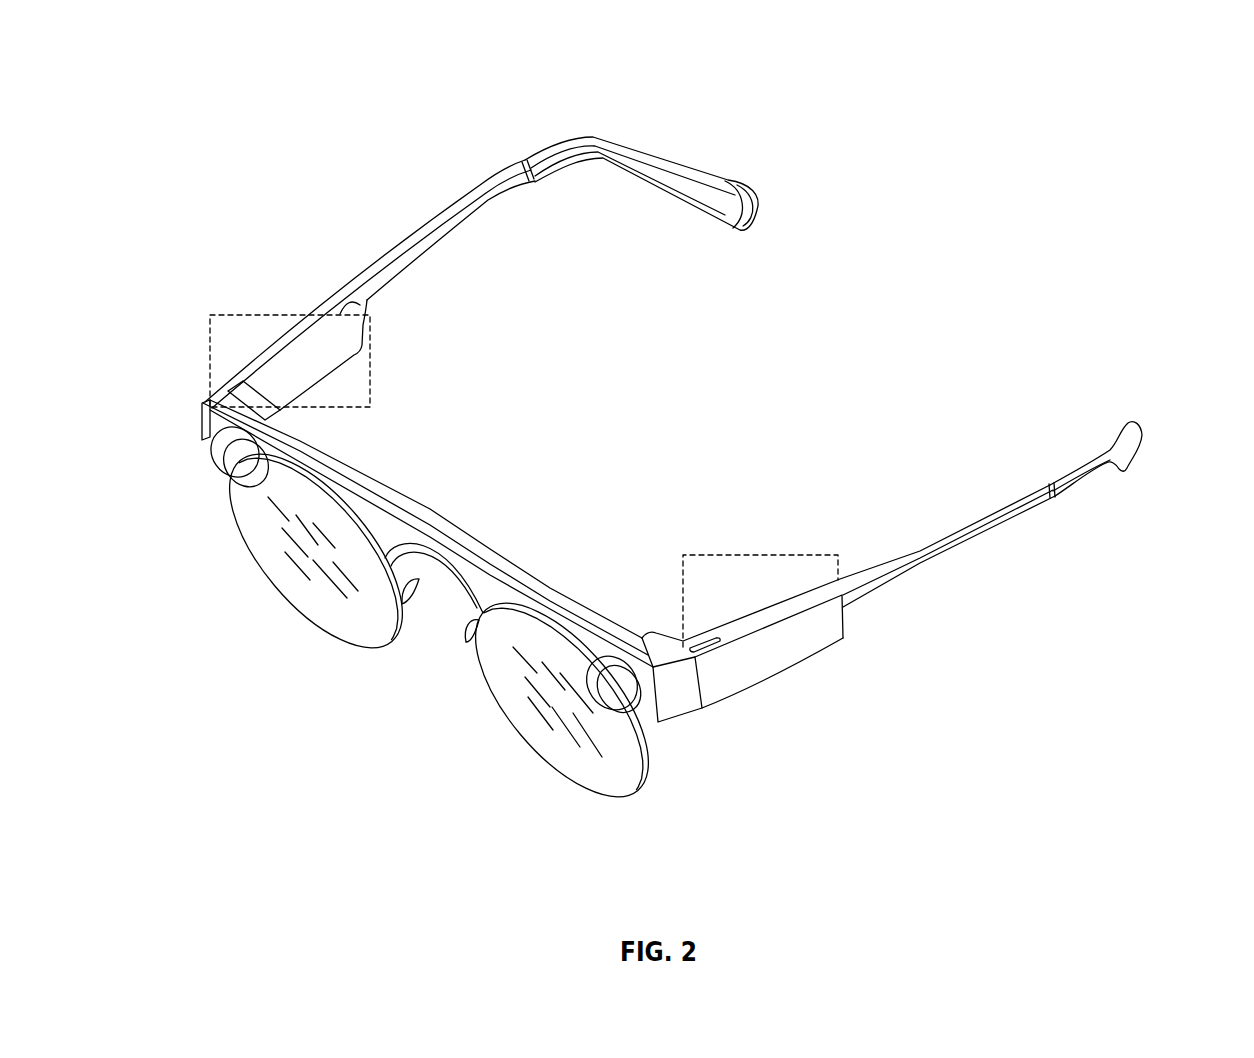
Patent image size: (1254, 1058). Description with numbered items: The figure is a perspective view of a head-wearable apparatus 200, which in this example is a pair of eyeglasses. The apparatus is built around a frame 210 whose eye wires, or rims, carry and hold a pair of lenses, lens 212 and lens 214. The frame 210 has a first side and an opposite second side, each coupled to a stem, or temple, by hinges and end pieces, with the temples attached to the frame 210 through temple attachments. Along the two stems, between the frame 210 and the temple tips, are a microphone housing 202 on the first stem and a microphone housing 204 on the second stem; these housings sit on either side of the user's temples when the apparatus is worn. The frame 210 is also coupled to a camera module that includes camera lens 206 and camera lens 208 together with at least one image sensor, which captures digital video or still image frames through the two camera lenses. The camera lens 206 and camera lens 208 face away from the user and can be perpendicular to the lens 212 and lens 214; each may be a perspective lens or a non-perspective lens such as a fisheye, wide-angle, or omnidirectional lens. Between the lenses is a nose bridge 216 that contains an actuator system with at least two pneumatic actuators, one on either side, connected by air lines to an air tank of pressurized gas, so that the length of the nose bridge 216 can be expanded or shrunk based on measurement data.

The head-wearable apparatus 200 is at (1090, 81).
The microphone housing 202 is at (252, 315).
The microphone housing 204 is at (763, 555).
The camera lens 206 is at (214, 458).
The camera lens 208 is at (634, 718).
The frame 210 is at (259, 562).
The lens 212 is at (308, 598).
The lens 214 is at (518, 723).
The nose bridge 216 is at (442, 560).